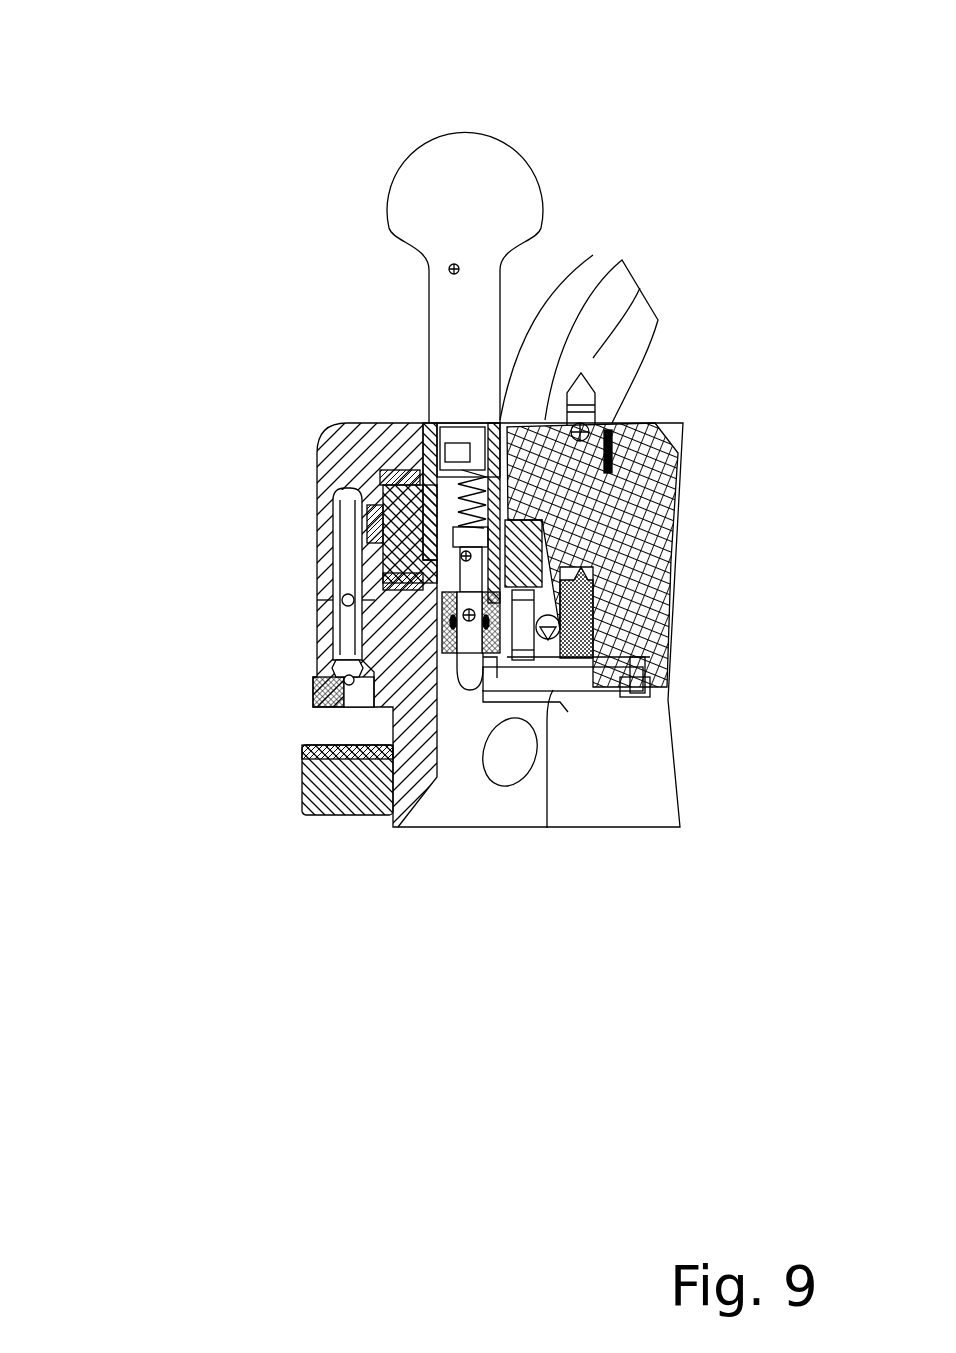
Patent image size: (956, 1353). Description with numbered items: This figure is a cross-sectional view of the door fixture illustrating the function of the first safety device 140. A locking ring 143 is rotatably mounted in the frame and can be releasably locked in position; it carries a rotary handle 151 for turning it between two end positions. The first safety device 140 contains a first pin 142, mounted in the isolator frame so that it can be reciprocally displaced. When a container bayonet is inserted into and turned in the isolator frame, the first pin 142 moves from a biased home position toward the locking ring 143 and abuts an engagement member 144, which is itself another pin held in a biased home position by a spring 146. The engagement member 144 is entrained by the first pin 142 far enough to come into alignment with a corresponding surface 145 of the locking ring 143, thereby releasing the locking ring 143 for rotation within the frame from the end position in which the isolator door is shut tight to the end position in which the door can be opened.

The first safety device 140 is at (248, 152).
The rotary handle 151 is at (503, 170).
The locking ring 143 is at (413, 423).
The spring 146 is at (593, 255).
The first pin 142 is at (465, 650).
The engagement member 144 is at (385, 561).
The corresponding surface 145 is at (437, 580).